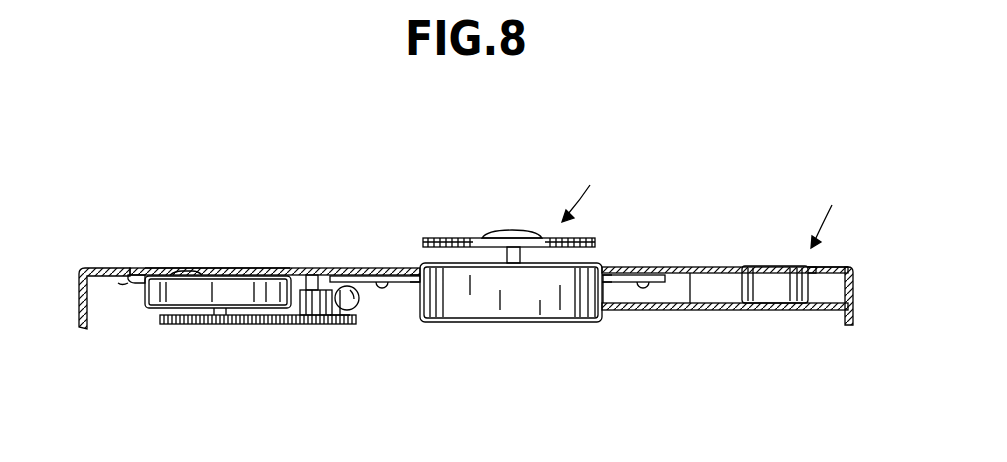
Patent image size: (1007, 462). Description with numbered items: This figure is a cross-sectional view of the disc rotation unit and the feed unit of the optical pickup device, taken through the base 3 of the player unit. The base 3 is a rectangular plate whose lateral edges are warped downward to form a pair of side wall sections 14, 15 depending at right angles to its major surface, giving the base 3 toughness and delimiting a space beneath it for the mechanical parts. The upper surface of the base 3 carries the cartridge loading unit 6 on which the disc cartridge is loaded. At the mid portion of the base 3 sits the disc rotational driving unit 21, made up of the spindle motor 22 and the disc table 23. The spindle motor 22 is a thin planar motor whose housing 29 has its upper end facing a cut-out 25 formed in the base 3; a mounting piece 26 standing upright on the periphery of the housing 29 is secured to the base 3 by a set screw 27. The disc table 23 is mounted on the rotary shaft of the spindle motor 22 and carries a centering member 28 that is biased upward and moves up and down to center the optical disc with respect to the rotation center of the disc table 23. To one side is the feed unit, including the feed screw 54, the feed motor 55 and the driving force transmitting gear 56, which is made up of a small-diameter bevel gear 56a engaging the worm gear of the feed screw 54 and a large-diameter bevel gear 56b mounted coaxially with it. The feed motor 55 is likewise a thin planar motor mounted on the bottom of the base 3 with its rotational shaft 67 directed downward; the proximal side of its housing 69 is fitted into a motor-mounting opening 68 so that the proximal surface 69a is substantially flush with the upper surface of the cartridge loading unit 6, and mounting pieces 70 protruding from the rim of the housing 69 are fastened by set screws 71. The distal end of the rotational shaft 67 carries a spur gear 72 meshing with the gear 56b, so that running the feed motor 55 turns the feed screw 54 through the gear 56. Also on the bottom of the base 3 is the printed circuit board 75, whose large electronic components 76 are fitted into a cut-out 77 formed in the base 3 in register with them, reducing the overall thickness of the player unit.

The base 3 is at (842, 272).
The cartridge loading unit 6 is at (829, 212).
The side wall section 14 is at (81, 300).
The side wall section 15 is at (854, 318).
The disc rotational driving unit 21 is at (592, 180).
The spindle motor 22 is at (470, 318).
The disc table 23 is at (608, 268).
The cut-out 25 is at (663, 280).
The mounting piece 26 is at (663, 284).
The set screw 27 is at (382, 290).
The centering member 28 is at (500, 232).
The housing 29 is at (588, 318).
The feed screw 54 is at (352, 292).
The feed motor 55 is at (245, 290).
The driving force transmitting gear 56 is at (315, 316).
The small-diameter bevel gear 56a is at (350, 324).
The large-diameter bevel gear 56b is at (320, 300).
The rotational shaft 67 is at (218, 314).
The motor-mounting opening 68 is at (178, 274).
The housing 69 is at (140, 283).
The proximal surface 69a is at (215, 272).
The mounting pieces 70 is at (131, 270).
The set screws 71 is at (130, 285).
The spur gear 72 is at (175, 324).
The printed circuit board 75 is at (775, 311).
The electronic components 76 is at (770, 276).
The cut-out 77 is at (812, 268).